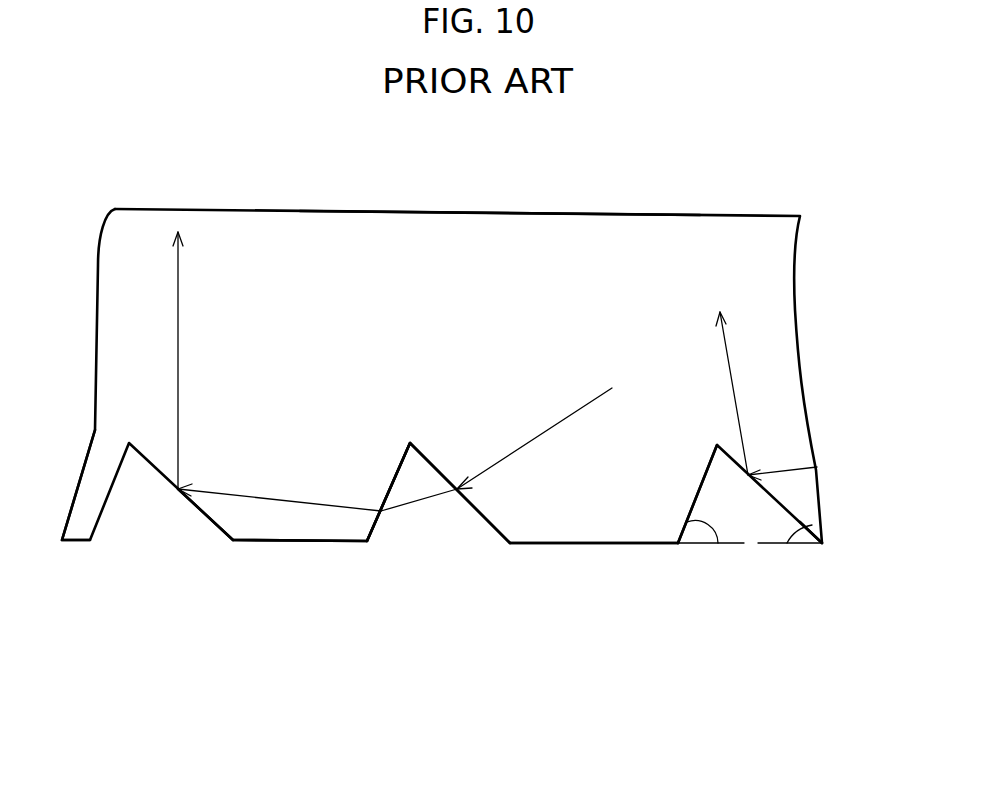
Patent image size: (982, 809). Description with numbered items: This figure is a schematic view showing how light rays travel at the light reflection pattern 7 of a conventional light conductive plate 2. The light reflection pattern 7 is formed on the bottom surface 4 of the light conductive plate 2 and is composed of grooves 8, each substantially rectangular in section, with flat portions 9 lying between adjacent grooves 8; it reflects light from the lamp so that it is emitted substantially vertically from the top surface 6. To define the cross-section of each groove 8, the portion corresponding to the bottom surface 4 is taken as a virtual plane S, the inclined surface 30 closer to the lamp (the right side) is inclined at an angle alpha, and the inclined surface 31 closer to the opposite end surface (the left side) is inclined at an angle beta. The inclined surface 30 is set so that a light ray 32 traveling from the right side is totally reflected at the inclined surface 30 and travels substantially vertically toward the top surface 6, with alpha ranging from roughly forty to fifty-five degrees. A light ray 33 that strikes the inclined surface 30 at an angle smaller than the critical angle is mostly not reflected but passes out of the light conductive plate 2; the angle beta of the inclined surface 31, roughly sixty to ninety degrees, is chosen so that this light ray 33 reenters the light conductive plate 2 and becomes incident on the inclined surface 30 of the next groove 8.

The light conductive plate 2 is at (470, 250).
The bottom surface 4 is at (77, 542).
The top surface 6 is at (670, 212).
The light reflection pattern 7 is at (563, 563).
The groove 8 is at (429, 515).
The flat portion 9 is at (333, 543).
The inclined surface 30 is at (207, 517).
The inclined surface 31 is at (397, 473).
The light ray 32 is at (730, 367).
The light ray 33 is at (178, 305).
The virtual plane S is at (747, 545).